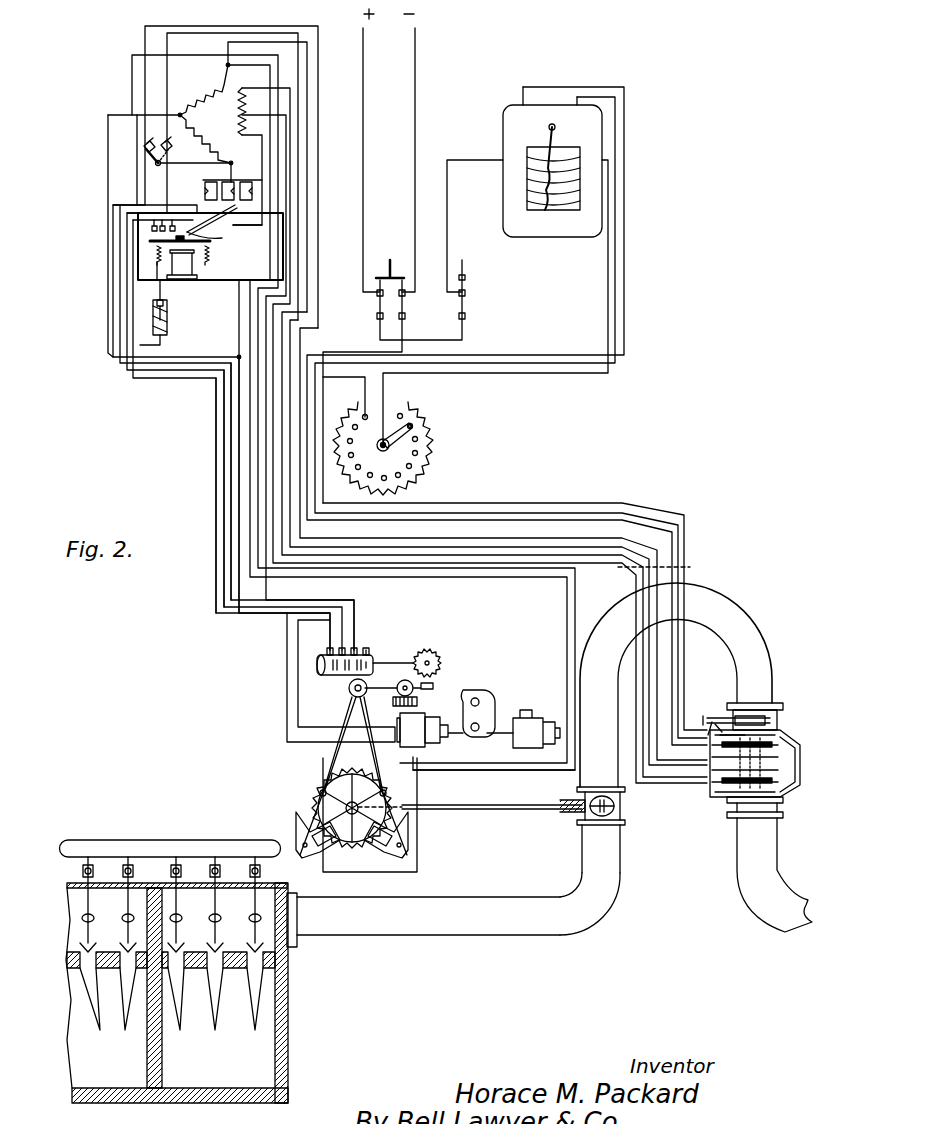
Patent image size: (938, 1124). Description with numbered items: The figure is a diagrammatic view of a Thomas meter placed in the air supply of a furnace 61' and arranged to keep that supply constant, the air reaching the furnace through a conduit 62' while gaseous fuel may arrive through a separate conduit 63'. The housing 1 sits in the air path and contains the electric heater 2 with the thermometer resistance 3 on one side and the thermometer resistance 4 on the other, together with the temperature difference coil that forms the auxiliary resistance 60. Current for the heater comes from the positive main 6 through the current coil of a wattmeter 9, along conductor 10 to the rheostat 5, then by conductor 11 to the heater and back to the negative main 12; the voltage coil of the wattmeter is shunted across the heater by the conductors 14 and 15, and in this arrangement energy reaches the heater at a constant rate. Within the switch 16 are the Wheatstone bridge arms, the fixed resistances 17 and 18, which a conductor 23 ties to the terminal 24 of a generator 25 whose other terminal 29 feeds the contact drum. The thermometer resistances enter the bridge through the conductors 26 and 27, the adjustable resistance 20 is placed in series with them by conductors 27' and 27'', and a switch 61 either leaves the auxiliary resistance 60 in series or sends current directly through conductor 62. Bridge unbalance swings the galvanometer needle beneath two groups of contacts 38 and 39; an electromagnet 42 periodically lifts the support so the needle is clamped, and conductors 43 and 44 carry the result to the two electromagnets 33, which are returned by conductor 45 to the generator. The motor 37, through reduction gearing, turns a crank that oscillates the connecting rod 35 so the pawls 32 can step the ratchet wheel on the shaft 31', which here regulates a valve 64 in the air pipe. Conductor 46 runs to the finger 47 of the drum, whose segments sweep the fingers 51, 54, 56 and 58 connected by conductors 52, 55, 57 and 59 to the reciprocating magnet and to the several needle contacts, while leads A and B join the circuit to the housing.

The housing 1 is at (783, 813).
The electric heater 2 is at (782, 760).
The thermometer resistance 3 is at (782, 790).
The thermometer resistance 4 is at (774, 745).
The rheostat 5 is at (420, 428).
The positive main 6 is at (371, 150).
The wattmeter 9 is at (604, 145).
The conductor 10 is at (608, 268).
The conductor 11 is at (631, 580).
The negative main 12 is at (615, 630).
The conductor 14 is at (615, 290).
The conductor 15 is at (624, 320).
The switch 16 is at (137, 178).
The fixed resistance 17 is at (170, 148).
The fixed resistance 18 is at (204, 90).
The adjustable resistance 20 is at (244, 95).
The conductor 23 is at (108, 193).
The generator terminal 24 is at (437, 728).
The generator 25 is at (440, 747).
The conductor 26 is at (214, 26).
The conductor 27 is at (467, 388).
The conductor 27' is at (353, 412).
The conductor 27'' is at (397, 414).
The generator terminal 29 is at (400, 728).
The shaft 31' is at (470, 825).
The pawl 32 is at (297, 822).
The electromagnet 33 is at (310, 836).
The connecting rod 35 is at (352, 698).
The motor 37 is at (525, 718).
The contacts 38 is at (170, 232).
The contacts 39 is at (196, 229).
The electromagnet 42 is at (172, 325).
The conductor 43 is at (160, 306).
The conductor 44 is at (207, 263).
The conductor 45 is at (417, 866).
The conductor 46 is at (298, 691).
The finger 47 is at (325, 652).
The finger 51 is at (333, 647).
The conductor 52 is at (239, 427).
The finger 54 is at (345, 647).
The conductor 55 is at (216, 447).
The finger 56 is at (357, 647).
The conductor 57 is at (224, 467).
The finger 58 is at (369, 647).
The conductor 59 is at (231, 486).
The auxiliary resistance 60 is at (760, 716).
The switch 61 is at (154, 151).
The furnace 61' is at (197, 993).
The conductor 62 is at (417, 382).
The air supply conduit 62' is at (423, 929).
The gaseous fuel conduit 63' is at (170, 876).
The valve 64 is at (626, 816).
The conductor lead A is at (642, 570).
The conductor lead B is at (702, 570).